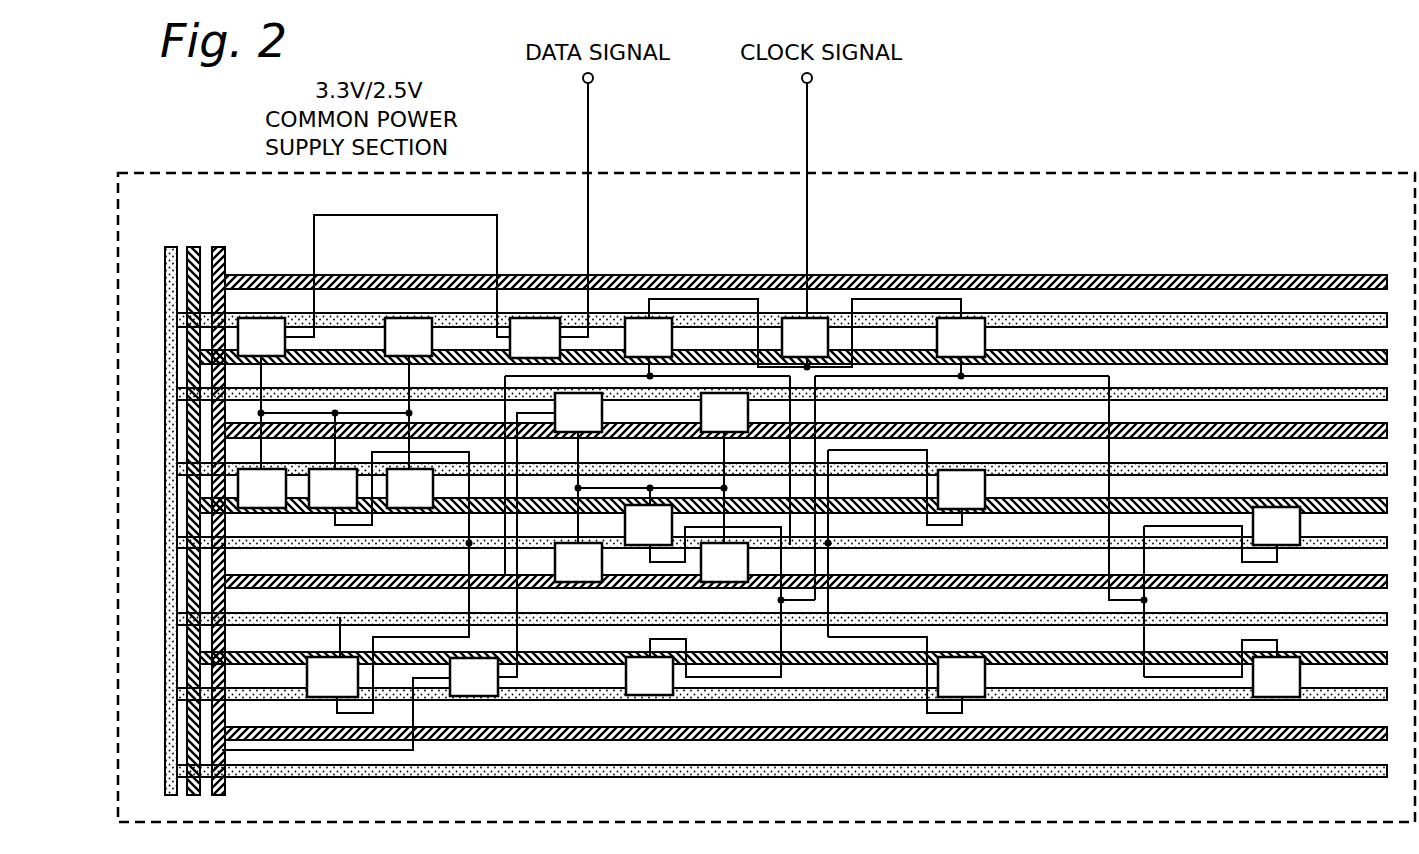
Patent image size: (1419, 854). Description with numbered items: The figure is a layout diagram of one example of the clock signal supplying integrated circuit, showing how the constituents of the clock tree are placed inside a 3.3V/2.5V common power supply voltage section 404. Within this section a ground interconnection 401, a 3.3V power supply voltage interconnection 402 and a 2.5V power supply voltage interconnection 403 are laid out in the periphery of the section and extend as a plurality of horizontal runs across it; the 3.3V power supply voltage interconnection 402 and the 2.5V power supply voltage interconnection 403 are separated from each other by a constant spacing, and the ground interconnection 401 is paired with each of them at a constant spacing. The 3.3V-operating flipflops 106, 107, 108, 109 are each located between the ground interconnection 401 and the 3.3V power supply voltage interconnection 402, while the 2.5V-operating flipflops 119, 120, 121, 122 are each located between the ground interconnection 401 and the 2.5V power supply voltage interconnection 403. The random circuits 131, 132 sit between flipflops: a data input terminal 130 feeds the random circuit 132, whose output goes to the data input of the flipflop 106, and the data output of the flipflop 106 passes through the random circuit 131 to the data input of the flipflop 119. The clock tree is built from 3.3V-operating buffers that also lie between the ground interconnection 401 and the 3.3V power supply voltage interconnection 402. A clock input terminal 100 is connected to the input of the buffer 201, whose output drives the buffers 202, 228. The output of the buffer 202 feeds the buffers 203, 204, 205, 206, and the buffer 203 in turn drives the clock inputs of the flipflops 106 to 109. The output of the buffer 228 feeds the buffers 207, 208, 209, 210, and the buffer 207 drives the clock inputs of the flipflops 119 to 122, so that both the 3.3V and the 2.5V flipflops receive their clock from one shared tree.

The clock input terminal 100 is at (813, 80).
The data input terminal 130 is at (594, 80).
The 3.3V-operating flipflop 106 is at (258, 318).
The 3.3V-operating flipflop 107 is at (405, 318).
The 3.3V-operating flipflop 108 is at (252, 508).
The 3.3V-operating flipflop 109 is at (402, 508).
The 2.5V-operating flipflop 119 is at (602, 413).
The 2.5V-operating flipflop 120 is at (738, 432).
The 2.5V-operating flipflop 121 is at (568, 582).
The 2.5V-operating flipflop 122 is at (722, 582).
The random circuit 131 is at (474, 696).
The random circuit 132 is at (530, 318).
The 3.3V-operating buffer 201 is at (818, 318).
The 3.3V-operating buffer 202 is at (672, 337).
The 3.3V-operating buffer 203 is at (325, 508).
The 3.3V-operating buffer 204 is at (978, 470).
The 3.3V-operating buffer 205 is at (335, 645).
The 3.3V-operating buffer 206 is at (975, 657).
The buffer 207 is at (660, 562).
The 3.3V-operating buffer 208 is at (1294, 507).
The 3.3V-operating buffer 209 is at (636, 695).
The 3.3V-operating buffer 210 is at (1294, 657).
The 3.3V-operating buffer 228 is at (975, 318).
The ground interconnection 401 is at (171, 246).
The 3.3V power supply voltage interconnection 402 is at (194, 246).
The 2.5V power supply voltage interconnection 403 is at (219, 246).
The 3.3V/2.5V common power supply voltage section 404 is at (992, 172).